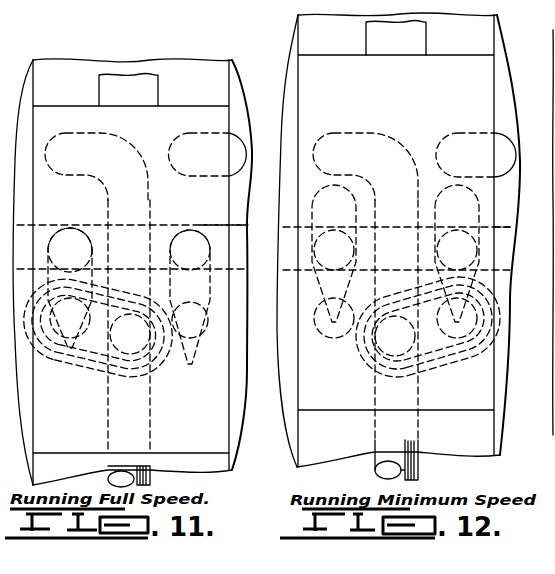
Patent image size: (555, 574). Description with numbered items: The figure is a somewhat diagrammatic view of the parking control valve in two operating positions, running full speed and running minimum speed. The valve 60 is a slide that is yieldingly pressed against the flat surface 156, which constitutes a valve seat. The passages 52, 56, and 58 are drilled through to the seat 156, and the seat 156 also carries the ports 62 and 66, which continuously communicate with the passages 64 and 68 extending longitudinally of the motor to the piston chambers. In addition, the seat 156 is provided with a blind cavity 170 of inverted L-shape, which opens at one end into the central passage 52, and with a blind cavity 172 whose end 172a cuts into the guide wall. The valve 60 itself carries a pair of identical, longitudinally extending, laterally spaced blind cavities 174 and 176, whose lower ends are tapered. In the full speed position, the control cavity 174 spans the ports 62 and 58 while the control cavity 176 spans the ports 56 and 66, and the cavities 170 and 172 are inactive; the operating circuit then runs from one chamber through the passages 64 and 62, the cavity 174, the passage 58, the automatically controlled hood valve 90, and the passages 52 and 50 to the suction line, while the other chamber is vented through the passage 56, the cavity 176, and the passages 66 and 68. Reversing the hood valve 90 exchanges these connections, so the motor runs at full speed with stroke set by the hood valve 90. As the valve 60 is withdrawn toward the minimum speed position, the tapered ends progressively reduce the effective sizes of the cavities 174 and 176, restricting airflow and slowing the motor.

In FIG. 11, the passage 50 is at (152, 480).
In FIG. 12, the passage 50 is at (380, 465).
In FIG. 11, the central passage 52 is at (115, 372).
In FIG. 12, the central passage 52 is at (364, 366).
In FIG. 11, the passage 56 is at (190, 364).
In FIG. 12, the passage 56 is at (441, 362).
In FIG. 11, the passage 58 is at (64, 353).
In FIG. 12, the passage 58 is at (328, 337).
In FIG. 11, the valve 60 is at (190, 105).
In FIG. 12, the valve 60 is at (469, 57).
In FIG. 11, the port 62 is at (70, 228).
In FIG. 12, the port 62 is at (357, 234).
In FIG. 11, the passage 64 is at (22, 224).
In FIG. 12, the passage 64 is at (553, 295).
In FIG. 11, the port 66 is at (190, 250).
In FIG. 12, the port 66 is at (437, 251).
In FIG. 11, the passage 68 is at (220, 225).
In FIG. 11, the hood valve 90 is at (94, 375).
In FIG. 12, the hood valve 90 is at (492, 346).
In FIG. 11, the flat surface 156 is at (72, 73).
In FIG. 12, the flat surface 156 is at (456, 438).
In FIG. 11, the blind cavity 170 is at (157, 206).
In FIG. 12, the blind cavity 170 is at (392, 143).
In FIG. 11, the blind cavity 172 is at (180, 133).
In FIG. 12, the blind cavity 172 is at (462, 131).
In FIG. 11, the end of blind cavity 172a is at (240, 141).
In FIG. 12, the end of blind cavity 172a is at (512, 138).
In FIG. 11, the blind cavity 174 is at (92, 270).
In FIG. 12, the blind cavity 174 is at (310, 212).
In FIG. 11, the blind cavity 176 is at (172, 291).
In FIG. 12, the blind cavity 176 is at (457, 253).